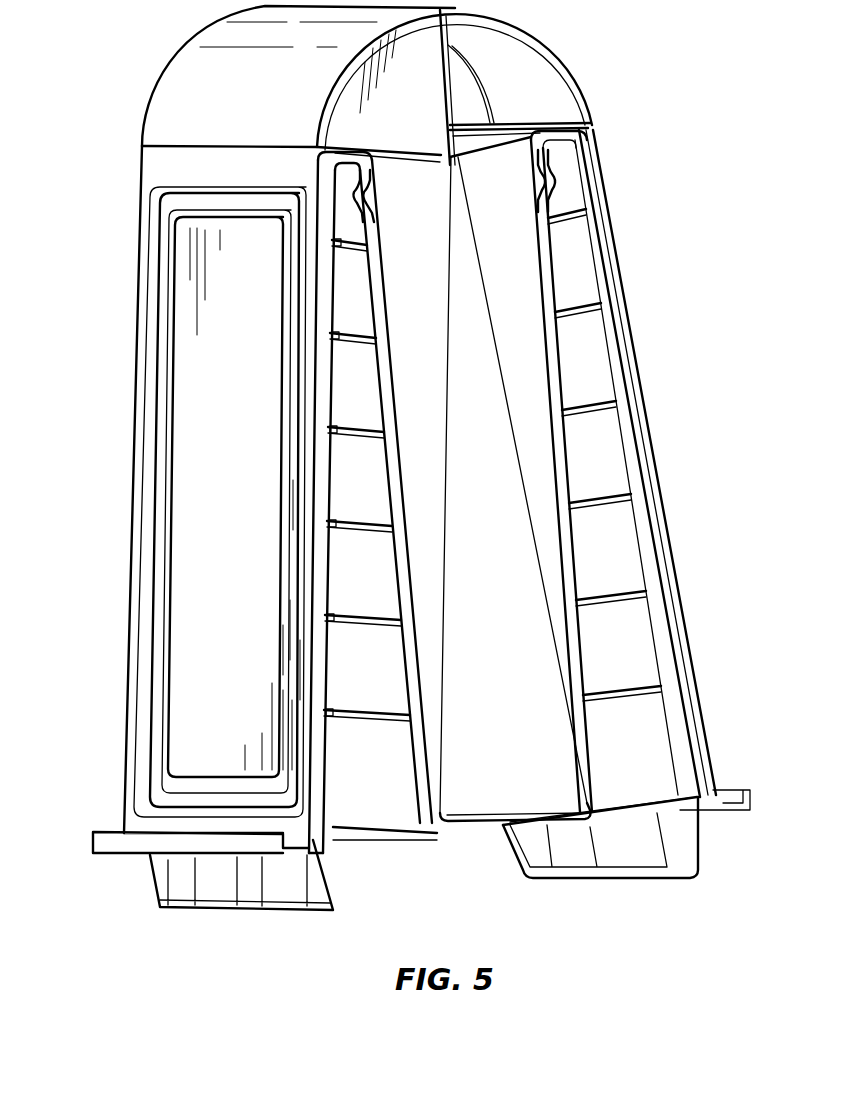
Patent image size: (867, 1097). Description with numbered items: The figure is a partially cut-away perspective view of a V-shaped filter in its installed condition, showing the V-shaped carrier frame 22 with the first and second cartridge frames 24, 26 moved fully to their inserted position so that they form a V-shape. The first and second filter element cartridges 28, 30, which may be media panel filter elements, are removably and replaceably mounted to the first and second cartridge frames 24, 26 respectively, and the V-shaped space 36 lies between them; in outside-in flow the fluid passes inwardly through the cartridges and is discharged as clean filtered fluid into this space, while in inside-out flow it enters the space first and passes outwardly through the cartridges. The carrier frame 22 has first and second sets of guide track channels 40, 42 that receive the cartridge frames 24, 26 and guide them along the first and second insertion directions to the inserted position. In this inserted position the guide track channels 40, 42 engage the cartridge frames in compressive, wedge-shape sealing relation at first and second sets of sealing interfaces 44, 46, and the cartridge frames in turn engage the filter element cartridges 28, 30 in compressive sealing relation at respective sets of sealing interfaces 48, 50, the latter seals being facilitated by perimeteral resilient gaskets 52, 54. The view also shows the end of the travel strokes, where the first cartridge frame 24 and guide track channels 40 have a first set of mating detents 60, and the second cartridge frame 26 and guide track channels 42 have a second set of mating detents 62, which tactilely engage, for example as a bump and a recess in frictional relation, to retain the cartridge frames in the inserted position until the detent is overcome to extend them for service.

The V-shaped carrier frame 22 is at (137, 182).
The first cartridge frame 24 is at (324, 502).
The second cartridge frame 26 is at (616, 504).
The first filter element cartridge 28 is at (430, 397).
The second filter element cartridge 30 is at (535, 463).
The V-shaped space 36 is at (512, 659).
The first set of guide track channels 40 is at (390, 290).
The second set of guide track channels 42 is at (537, 255).
The first set of sealing interfaces 44 is at (387, 357).
The second set of sealing interfaces 46 is at (552, 333).
The set of sealing interfaces 48 is at (320, 288).
The set of sealing interfaces 50 is at (593, 250).
The perimeteral resilient gasket 52 is at (313, 733).
The perimeteral resilient gasket 54 is at (640, 417).
The first set of mating detents 60 is at (367, 190).
The second set of mating detents 62 is at (548, 175).